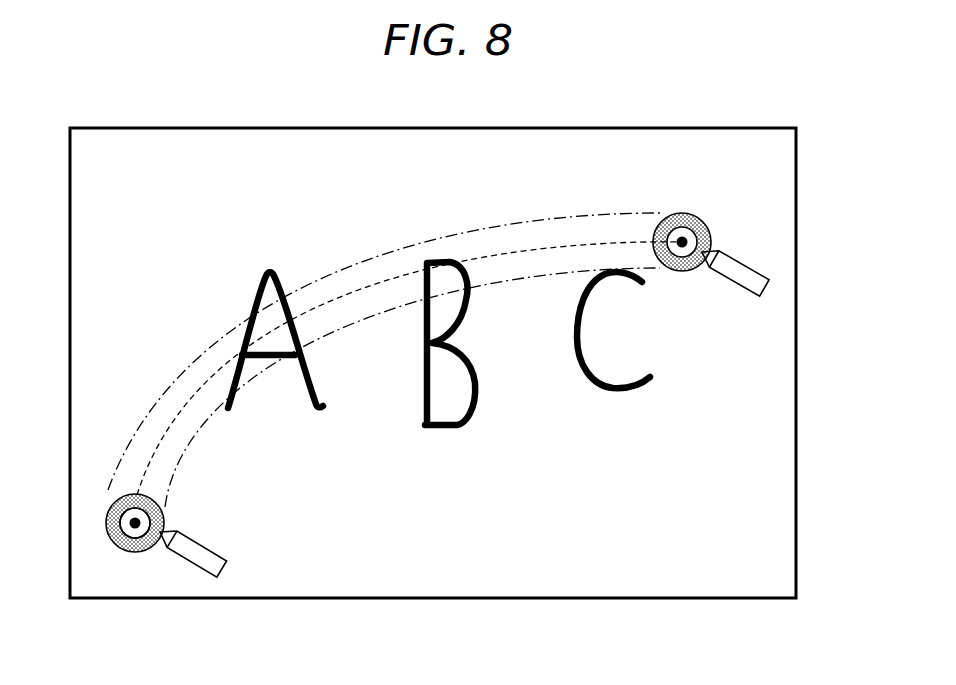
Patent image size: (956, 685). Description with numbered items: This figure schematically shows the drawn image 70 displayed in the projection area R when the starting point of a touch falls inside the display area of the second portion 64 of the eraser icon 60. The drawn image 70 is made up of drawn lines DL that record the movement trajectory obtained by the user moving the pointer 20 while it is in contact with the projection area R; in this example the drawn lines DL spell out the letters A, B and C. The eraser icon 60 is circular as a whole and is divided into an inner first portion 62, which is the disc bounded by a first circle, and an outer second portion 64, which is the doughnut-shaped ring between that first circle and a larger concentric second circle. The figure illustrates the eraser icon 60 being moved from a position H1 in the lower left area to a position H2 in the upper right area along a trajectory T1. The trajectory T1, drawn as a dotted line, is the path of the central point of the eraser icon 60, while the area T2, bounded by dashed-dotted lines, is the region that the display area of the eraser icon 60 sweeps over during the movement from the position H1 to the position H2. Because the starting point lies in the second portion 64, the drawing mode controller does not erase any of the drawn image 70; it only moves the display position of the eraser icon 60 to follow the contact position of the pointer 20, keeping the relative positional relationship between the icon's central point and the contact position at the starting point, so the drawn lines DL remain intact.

The projection area R is at (66, 177).
The drawn image 70 is at (740, 333).
The drawn lines DL is at (645, 378).
The trajectory T1 is at (566, 242).
The area T2 is at (486, 228).
The position H1 is at (121, 557).
The position H2 is at (688, 226).
The eraser icon 60 is at (177, 514).
The first portion 62 is at (145, 536).
The second portion 64 is at (112, 532).
The pointer 20 is at (200, 571).